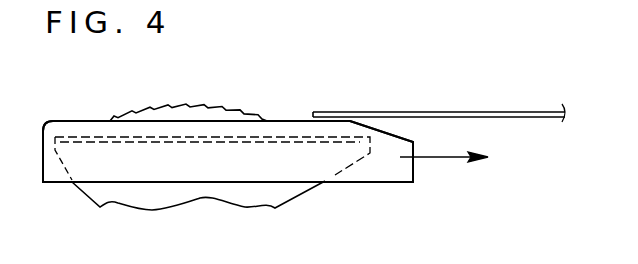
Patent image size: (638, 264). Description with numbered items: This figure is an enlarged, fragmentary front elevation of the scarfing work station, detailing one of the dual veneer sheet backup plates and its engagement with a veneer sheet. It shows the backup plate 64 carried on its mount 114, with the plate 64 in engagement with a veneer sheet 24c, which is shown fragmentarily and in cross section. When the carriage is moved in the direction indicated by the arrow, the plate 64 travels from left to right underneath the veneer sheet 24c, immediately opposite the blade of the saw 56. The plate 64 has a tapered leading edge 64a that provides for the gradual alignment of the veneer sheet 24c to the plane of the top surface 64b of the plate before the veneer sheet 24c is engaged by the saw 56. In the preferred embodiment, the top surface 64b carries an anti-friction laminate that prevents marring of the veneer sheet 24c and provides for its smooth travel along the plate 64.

The backup plate 64 is at (228, 168).
The tapered leading edge 64a is at (412, 135).
The top surface 64b is at (78, 120).
The saw 56 is at (208, 105).
The veneer sheet 24c is at (400, 112).
The mount 114 is at (307, 190).